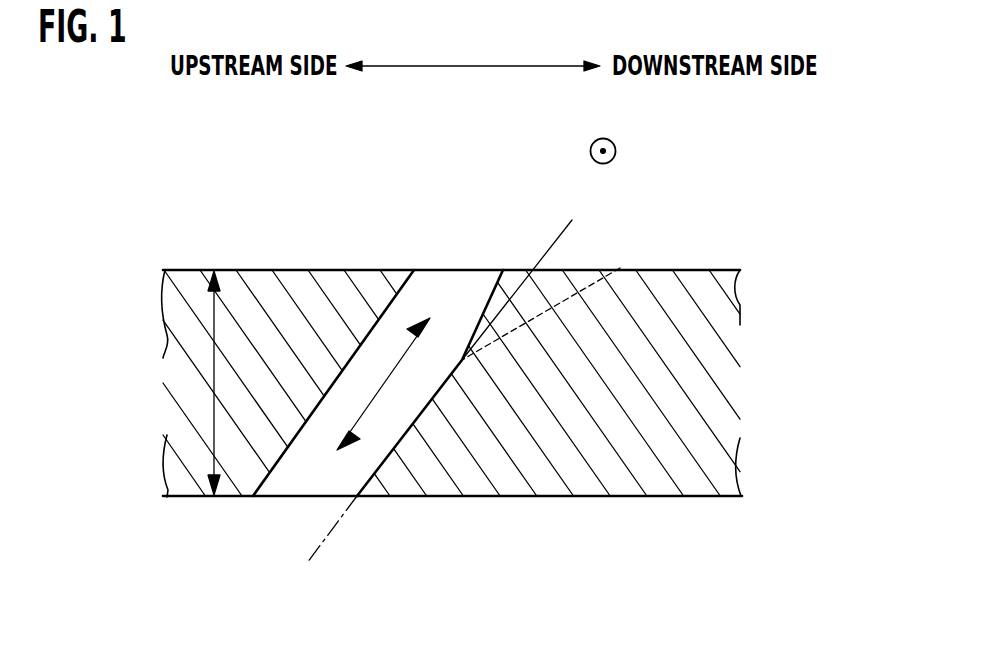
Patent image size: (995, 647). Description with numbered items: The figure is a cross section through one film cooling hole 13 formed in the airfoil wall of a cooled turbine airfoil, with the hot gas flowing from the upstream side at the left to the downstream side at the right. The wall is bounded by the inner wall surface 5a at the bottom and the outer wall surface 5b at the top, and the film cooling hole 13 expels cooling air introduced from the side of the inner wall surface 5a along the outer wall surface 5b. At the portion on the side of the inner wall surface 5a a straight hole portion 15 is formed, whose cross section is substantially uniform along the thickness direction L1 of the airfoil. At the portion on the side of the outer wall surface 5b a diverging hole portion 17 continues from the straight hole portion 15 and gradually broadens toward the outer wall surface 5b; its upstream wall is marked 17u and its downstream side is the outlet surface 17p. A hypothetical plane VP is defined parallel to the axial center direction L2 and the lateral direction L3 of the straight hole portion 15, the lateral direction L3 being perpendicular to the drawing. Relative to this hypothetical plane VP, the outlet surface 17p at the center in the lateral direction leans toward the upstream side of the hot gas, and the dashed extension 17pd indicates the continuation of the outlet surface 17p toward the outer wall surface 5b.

The film cooling hole 13 is at (340, 192).
The straight hole portion 15 is at (318, 462).
The diverging hole portion 17 is at (473, 317).
The upstream wall surface of slot 17u is at (415, 270).
The outlet surface 17p is at (494, 296).
The extension plane of downstream wall 17pd is at (620, 268).
The inner wall surface 5a is at (687, 496).
The outer wall surface 5b is at (687, 268).
The thickness direction L1 is at (214, 437).
The axial center direction L2 is at (370, 387).
The lateral direction L3 is at (602, 136).
The hypothetical plane VP is at (550, 238).